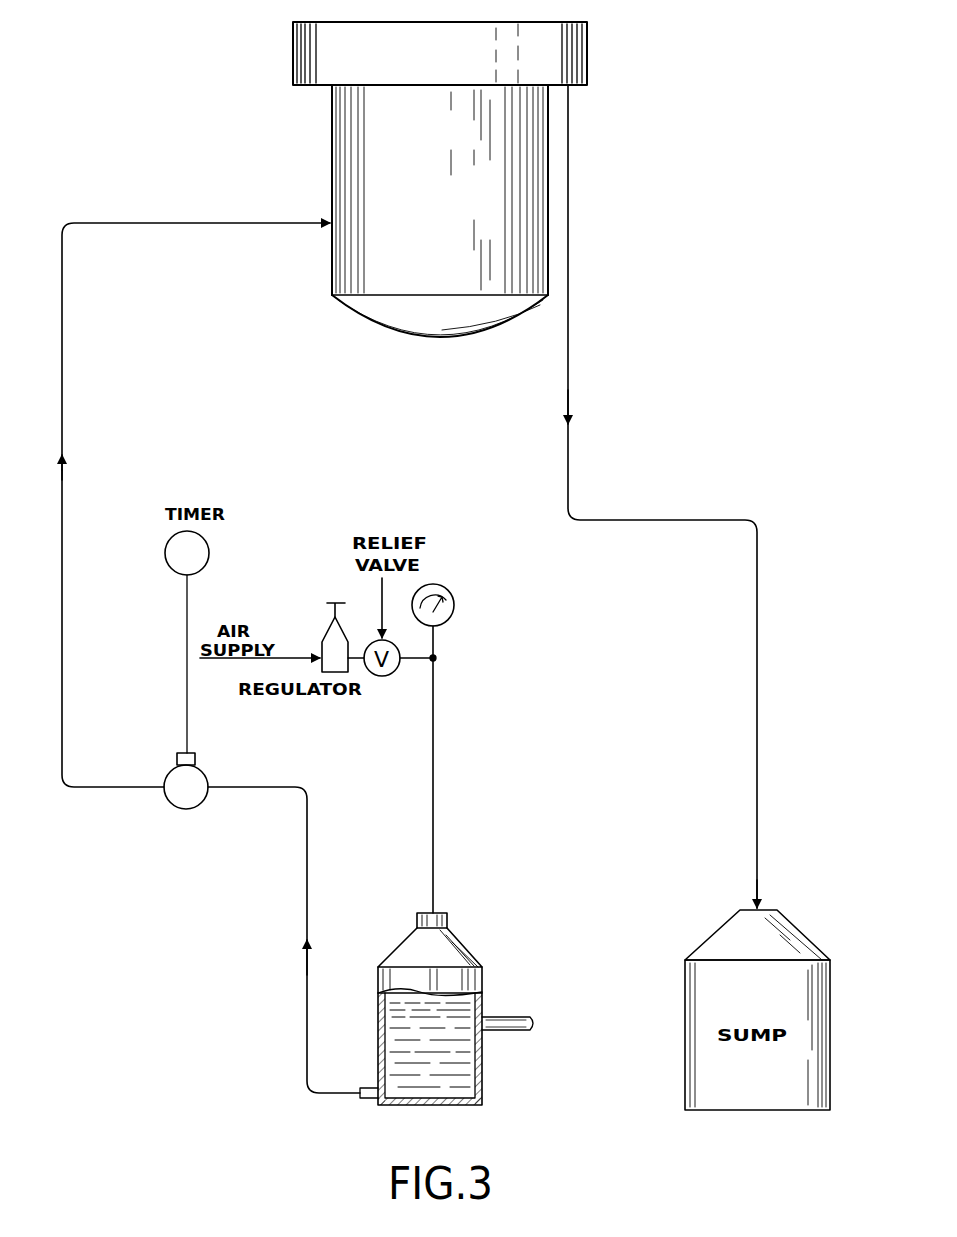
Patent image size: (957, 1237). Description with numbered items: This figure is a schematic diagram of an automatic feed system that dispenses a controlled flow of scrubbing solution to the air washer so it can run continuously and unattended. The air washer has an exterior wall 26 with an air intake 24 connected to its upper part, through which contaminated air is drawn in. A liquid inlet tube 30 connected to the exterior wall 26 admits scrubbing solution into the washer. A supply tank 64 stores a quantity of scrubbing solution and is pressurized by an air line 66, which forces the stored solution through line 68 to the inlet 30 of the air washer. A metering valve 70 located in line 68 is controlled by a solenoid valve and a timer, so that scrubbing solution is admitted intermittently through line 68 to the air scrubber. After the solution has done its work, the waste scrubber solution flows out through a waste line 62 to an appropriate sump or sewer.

The air intake 24 is at (293, 30).
The exterior wall 26 is at (342, 105).
The liquid inlet tube 30 is at (300, 222).
The waste line 62 is at (568, 128).
The supply tank 64 is at (482, 1092).
The air line 66 is at (433, 882).
The line 68 is at (305, 899).
The metering valve 70 is at (170, 770).